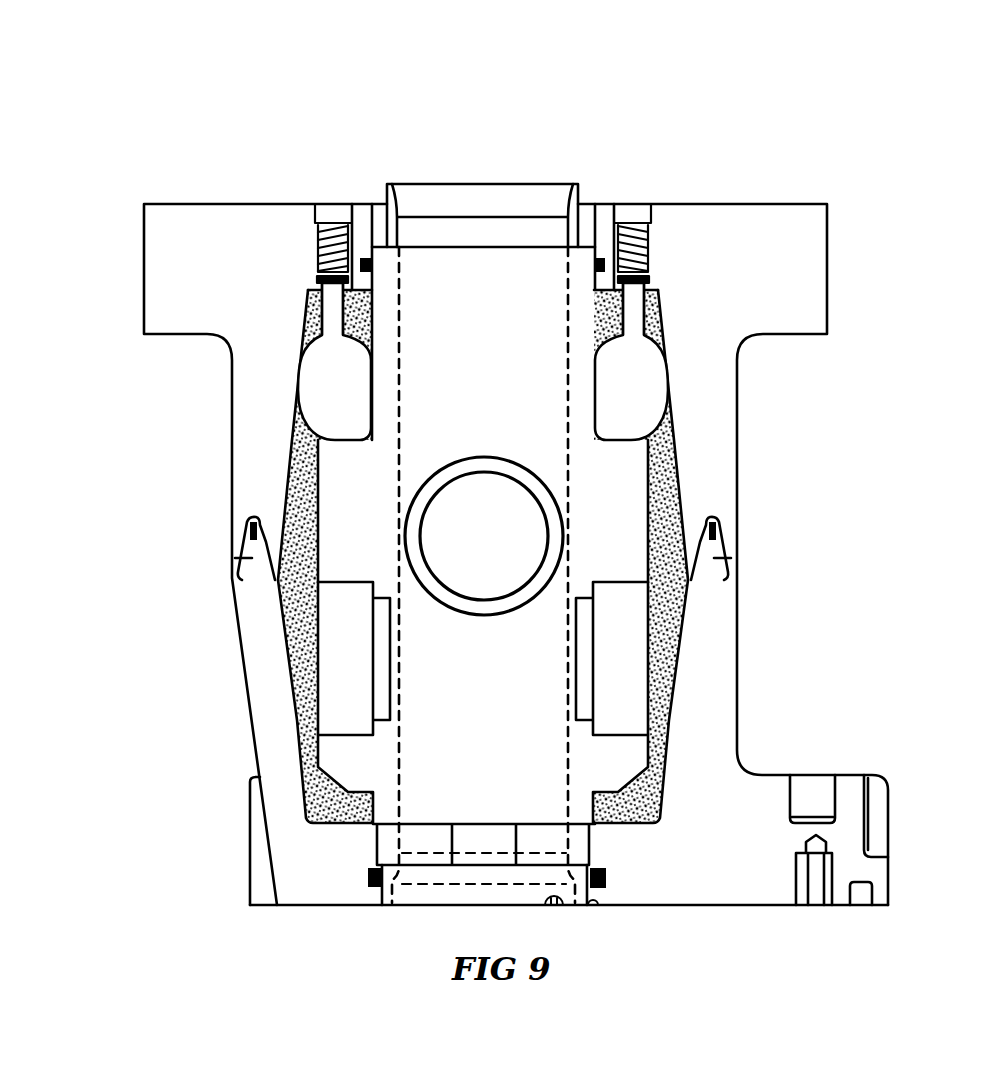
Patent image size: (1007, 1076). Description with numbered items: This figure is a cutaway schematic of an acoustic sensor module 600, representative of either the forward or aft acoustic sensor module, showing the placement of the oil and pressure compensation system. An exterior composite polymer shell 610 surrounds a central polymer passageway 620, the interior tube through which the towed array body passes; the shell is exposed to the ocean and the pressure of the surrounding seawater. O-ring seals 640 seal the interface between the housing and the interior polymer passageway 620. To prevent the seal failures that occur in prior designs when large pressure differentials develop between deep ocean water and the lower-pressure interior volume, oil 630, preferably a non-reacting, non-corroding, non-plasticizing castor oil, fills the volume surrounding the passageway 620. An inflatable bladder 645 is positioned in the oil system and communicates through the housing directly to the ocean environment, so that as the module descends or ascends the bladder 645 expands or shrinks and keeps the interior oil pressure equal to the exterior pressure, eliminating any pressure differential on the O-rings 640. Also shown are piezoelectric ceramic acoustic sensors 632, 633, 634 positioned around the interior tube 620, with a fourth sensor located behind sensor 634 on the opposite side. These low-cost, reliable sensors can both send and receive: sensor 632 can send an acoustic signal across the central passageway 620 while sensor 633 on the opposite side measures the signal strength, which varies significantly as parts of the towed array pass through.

The acoustic sensor module 600 is at (184, 118).
The exterior composite polymer shell 610 is at (233, 495).
The central polymer passageway 620 is at (443, 785).
The oil 630 is at (315, 583).
The piezoelectric ceramic acoustic sensor 632 is at (345, 680).
The piezoelectric ceramic acoustic sensor 633 is at (633, 713).
The piezoelectric ceramic acoustic sensor 634 is at (550, 513).
The O-ring seals 640 is at (372, 265).
The inflatable bladder 645 is at (315, 410).